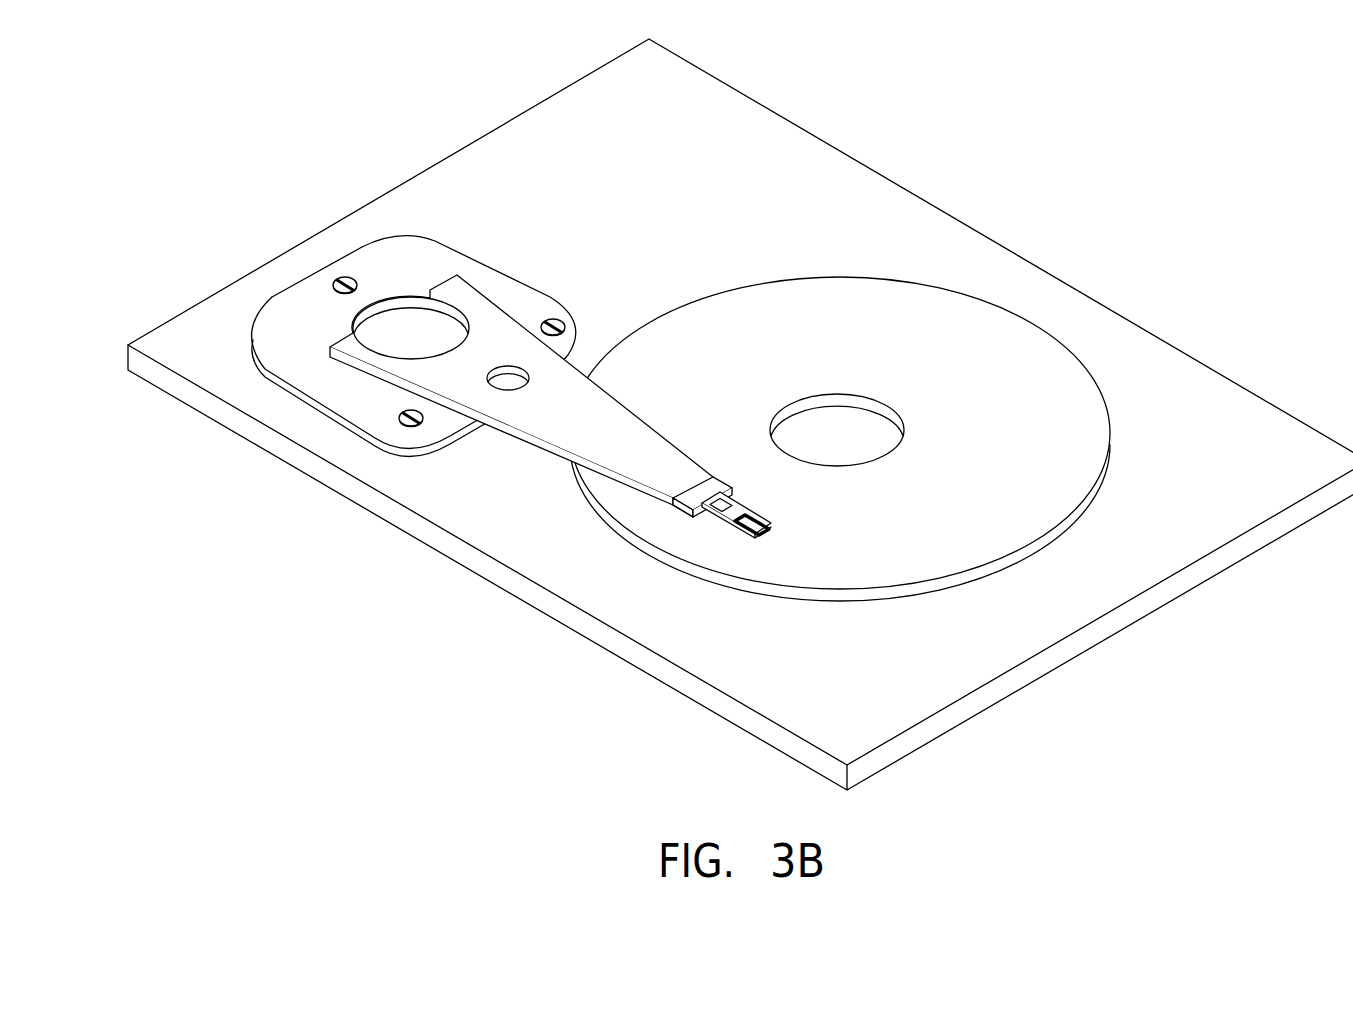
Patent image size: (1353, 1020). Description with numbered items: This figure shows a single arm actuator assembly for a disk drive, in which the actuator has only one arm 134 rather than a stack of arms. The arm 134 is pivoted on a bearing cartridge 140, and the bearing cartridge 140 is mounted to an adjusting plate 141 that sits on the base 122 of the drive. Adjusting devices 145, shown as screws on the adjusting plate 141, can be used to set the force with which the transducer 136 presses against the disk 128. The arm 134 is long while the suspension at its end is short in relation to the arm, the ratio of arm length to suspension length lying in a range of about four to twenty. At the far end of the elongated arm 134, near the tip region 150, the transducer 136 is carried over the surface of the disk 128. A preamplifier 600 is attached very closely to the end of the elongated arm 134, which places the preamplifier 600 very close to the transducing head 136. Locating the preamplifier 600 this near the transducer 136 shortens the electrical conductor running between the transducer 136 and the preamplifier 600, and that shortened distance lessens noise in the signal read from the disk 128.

The base plate 122 is at (893, 220).
The disk 128 is at (1087, 430).
The arm 134 is at (602, 450).
The transducer 136 is at (760, 532).
The bearing cartridge 140 is at (520, 392).
The adjusting plate 141 is at (428, 258).
The adjusting devices 145 is at (344, 278).
The arm tip block / suspension mount 150 is at (743, 494).
The preamplifier 600 is at (688, 516).